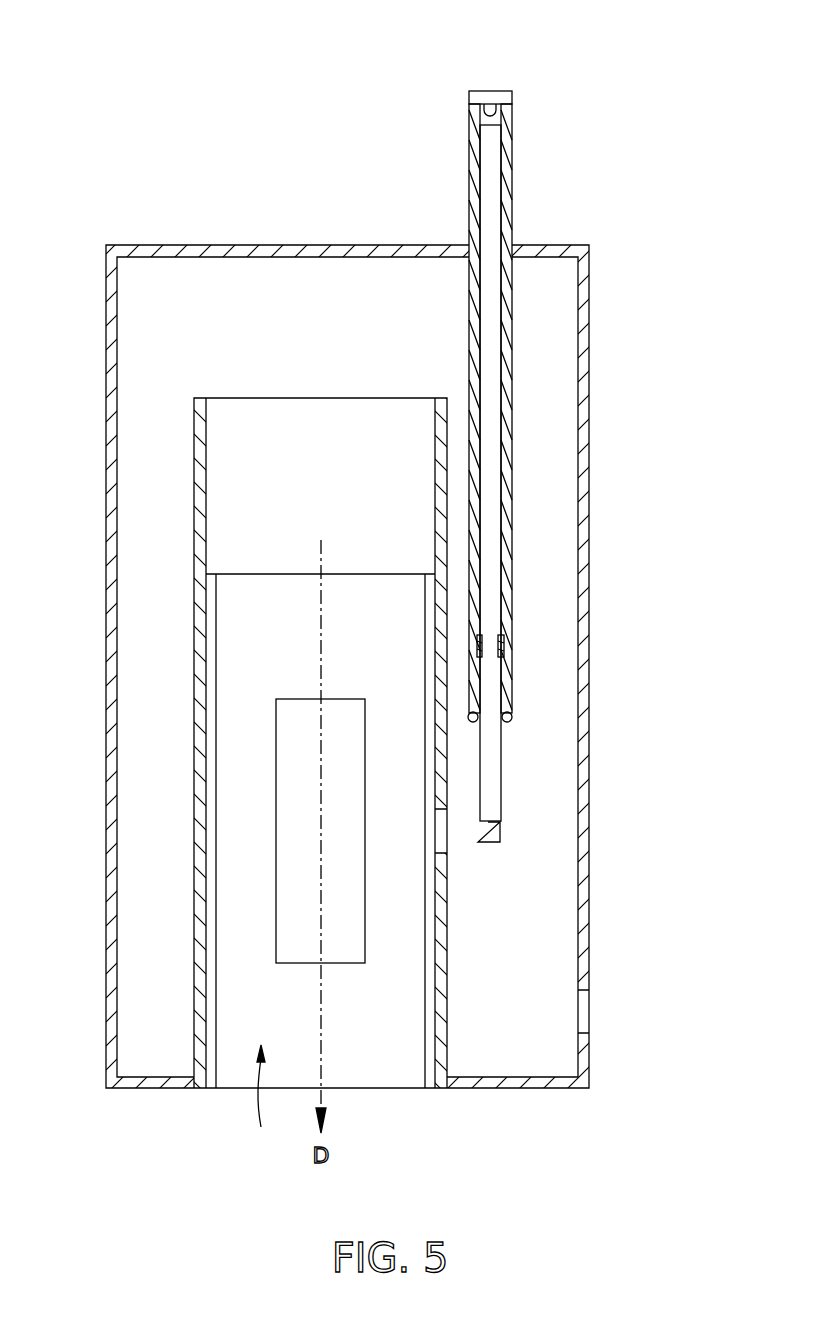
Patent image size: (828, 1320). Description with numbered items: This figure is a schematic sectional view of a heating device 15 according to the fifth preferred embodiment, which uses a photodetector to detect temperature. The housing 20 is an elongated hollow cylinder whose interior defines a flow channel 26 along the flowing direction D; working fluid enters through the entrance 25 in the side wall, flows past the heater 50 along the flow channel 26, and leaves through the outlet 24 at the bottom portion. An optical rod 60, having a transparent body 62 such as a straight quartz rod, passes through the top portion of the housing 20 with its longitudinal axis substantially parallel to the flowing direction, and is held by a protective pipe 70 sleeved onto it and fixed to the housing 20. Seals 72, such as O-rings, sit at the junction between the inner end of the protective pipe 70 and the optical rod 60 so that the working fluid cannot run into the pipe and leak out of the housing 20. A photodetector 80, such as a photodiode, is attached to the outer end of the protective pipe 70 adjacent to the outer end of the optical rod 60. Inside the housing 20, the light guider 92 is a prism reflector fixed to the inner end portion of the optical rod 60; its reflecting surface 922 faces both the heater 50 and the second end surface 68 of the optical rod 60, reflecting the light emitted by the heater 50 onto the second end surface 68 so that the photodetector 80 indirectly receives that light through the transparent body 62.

The heating device 15 is at (668, 90).
The housing 20 is at (583, 328).
The outlet 24 is at (368, 1090).
The entrance 25 is at (590, 1013).
The flow channel 26 is at (258, 1102).
The heater 50 is at (295, 783).
The optical rod 60 is at (582, 483).
The transparent body 62 is at (488, 548).
The second end surface 68 is at (500, 824).
The protective pipe 70 is at (508, 456).
The seals 72 is at (505, 643).
The photodetector 80 is at (491, 105).
The light guider 92 is at (495, 833).
The reflecting surface 922 is at (490, 834).